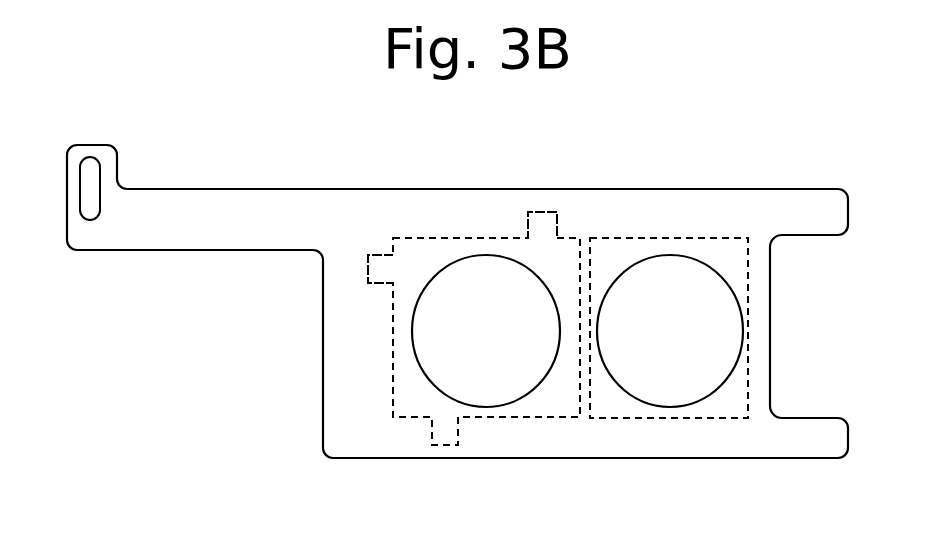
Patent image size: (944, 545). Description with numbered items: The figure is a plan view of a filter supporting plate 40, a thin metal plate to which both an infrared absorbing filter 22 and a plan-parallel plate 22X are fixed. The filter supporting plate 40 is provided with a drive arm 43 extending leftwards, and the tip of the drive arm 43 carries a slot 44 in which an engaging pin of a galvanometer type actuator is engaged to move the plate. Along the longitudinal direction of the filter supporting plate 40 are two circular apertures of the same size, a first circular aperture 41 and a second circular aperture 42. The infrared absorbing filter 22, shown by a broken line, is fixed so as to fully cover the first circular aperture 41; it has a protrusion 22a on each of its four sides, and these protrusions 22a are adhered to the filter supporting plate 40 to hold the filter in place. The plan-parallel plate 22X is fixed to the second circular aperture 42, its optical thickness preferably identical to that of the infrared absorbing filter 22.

The filter supporting plate 40 is at (637, 185).
The drive arm 43 is at (210, 220).
The slot 44 is at (93, 219).
The first circular aperture 41 is at (502, 345).
The second circular aperture 42 is at (682, 345).
The infrared absorbing filter 22 is at (531, 418).
The plan-parallel plate 22X is at (722, 243).
The protrusion 22a is at (563, 222).